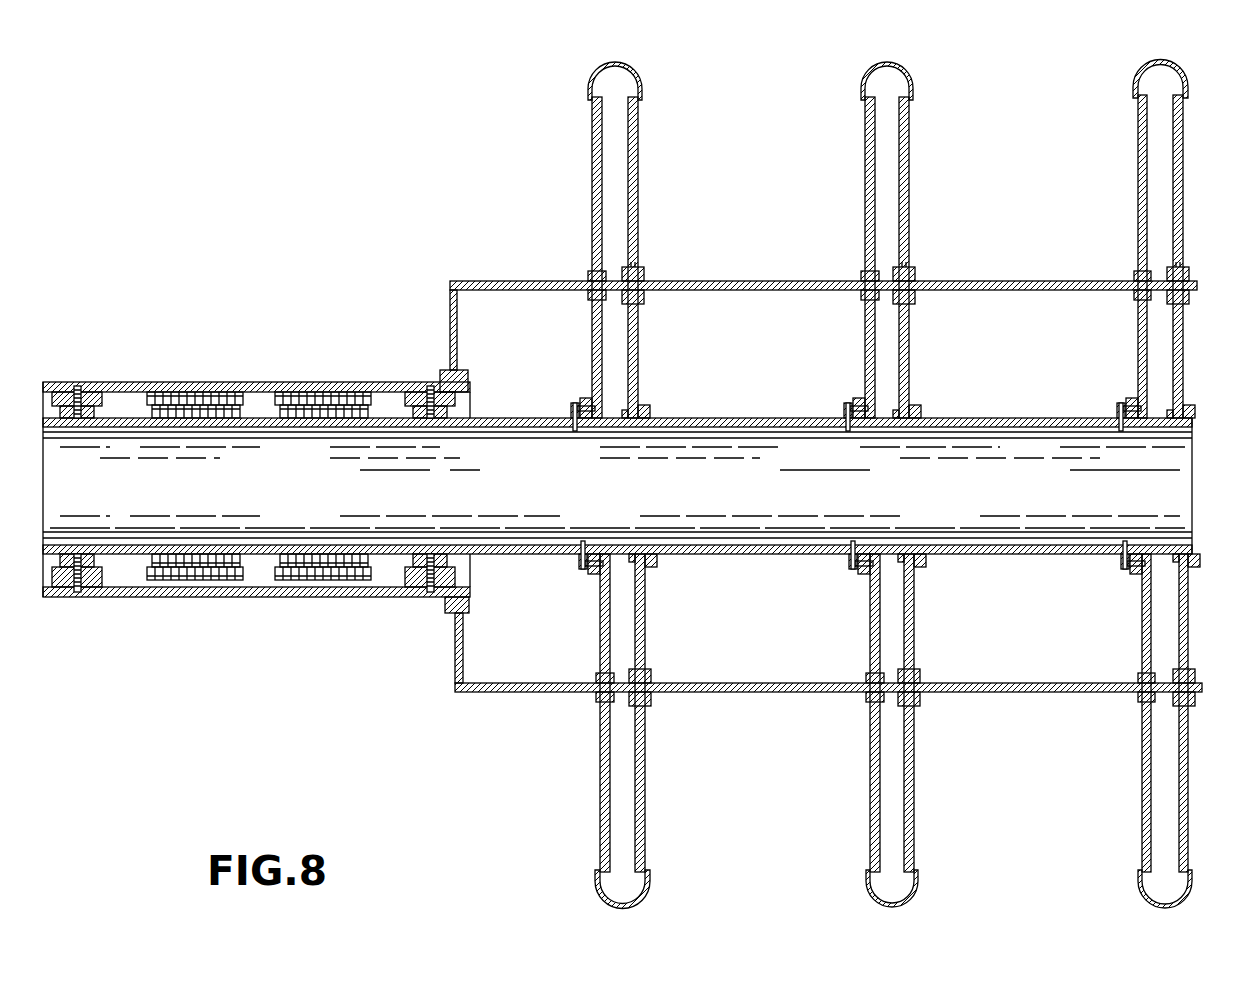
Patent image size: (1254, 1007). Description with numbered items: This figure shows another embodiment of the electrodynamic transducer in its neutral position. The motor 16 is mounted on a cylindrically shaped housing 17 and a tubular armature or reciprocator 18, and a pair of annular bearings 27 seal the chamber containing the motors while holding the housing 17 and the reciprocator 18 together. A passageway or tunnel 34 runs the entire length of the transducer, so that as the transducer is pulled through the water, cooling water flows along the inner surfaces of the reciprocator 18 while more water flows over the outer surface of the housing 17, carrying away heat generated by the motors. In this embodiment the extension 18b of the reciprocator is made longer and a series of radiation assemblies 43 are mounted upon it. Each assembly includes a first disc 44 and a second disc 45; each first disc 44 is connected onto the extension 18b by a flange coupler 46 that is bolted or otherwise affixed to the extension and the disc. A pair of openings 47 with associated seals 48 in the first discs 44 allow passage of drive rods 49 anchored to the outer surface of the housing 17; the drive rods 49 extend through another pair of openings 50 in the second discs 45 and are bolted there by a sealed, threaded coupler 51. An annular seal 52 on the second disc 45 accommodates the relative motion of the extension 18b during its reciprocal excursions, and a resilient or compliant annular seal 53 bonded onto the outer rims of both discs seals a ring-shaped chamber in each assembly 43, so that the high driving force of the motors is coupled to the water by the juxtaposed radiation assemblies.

The motor 16 is at (172, 354).
The cylindrically shaped housing 17 is at (258, 382).
The tubular armature or reciprocator 18 is at (402, 430).
The extension 18b is at (552, 432).
The annular bearing 27 is at (100, 398).
The passageway or tunnel 34 is at (786, 490).
The radiation assembly 43 is at (572, 104).
The first disc 44 is at (592, 172).
The second disc 45 is at (638, 206).
The flange coupler 46 is at (588, 396).
The opening 47 is at (590, 282).
The seal 48 is at (592, 292).
The drive rod 49 is at (498, 281).
The opening 50 is at (640, 276).
The sealed, threaded coupler 51 is at (644, 296).
The annular seal 52 is at (646, 414).
The resilient or compliant annular seal 53 is at (638, 85).